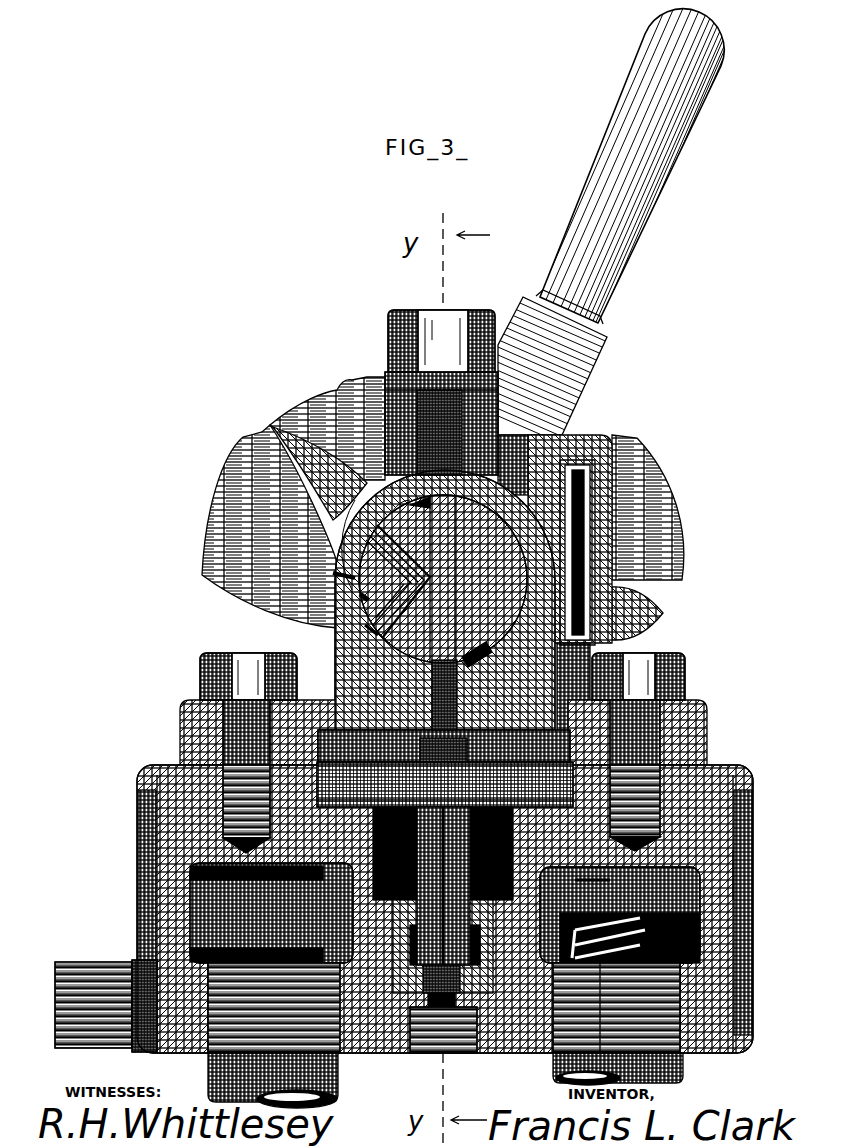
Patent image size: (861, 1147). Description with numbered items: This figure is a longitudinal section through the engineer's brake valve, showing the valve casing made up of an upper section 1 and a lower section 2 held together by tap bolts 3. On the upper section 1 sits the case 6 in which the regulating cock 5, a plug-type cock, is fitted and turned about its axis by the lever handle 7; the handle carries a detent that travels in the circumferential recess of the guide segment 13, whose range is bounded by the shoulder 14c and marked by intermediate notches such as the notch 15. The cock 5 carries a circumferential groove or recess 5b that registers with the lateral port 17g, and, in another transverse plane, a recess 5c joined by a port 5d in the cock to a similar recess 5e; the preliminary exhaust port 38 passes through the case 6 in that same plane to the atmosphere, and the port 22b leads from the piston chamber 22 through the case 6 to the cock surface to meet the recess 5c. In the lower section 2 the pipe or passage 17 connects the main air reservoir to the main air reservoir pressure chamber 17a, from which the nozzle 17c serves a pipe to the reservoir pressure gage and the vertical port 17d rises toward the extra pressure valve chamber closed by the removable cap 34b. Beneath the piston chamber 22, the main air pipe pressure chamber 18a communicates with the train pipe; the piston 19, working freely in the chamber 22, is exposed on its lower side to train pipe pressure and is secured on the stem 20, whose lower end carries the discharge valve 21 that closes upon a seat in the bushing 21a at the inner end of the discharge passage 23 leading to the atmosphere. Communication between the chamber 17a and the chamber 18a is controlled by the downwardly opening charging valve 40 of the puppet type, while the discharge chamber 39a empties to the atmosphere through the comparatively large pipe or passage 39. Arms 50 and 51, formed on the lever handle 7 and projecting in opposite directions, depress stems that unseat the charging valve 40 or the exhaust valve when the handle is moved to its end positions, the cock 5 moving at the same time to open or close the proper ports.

The upper section 1 is at (335, 688).
The lower section 2 is at (140, 857).
The tap bolts 3 is at (442, 753).
The regulating cock 5 is at (443, 579).
The circumferential groove or recess 5b is at (490, 650).
The circumferential groove or recess 5c is at (382, 634).
The port 5d is at (398, 581).
The circumferential recess 5e is at (405, 502).
The case 6 is at (445, 600).
The lever handle 7 is at (635, 172).
The guide segment 13 is at (327, 428).
The shoulder 14c is at (262, 445).
The notch 15 is at (370, 385).
The pipe or passage 17 is at (680, 1070).
The main air reservoir pressure chamber 17a is at (620, 915).
The nozzle or threaded connection 17c is at (106, 988).
The vertical port or passage 17d is at (595, 425).
The lateral port 17g is at (590, 572).
The main air pipe pressure chamber 18a is at (370, 848).
The piston 19 is at (445, 784).
The stem 20 is at (443, 886).
The discharge valve 21 is at (420, 960).
The bushing 21a is at (470, 975).
The piston chamber 22 is at (444, 746).
The port 22b is at (452, 704).
The discharge passage 23 is at (450, 1056).
The removable cap 34b is at (395, 320).
The preliminary exhaust port 38 is at (337, 577).
The pipe or passage 39 is at (340, 1076).
The discharge chamber 39a is at (271, 913).
The charging valve 40 is at (565, 918).
The arm 50 is at (655, 620).
The arm 51 is at (320, 473).